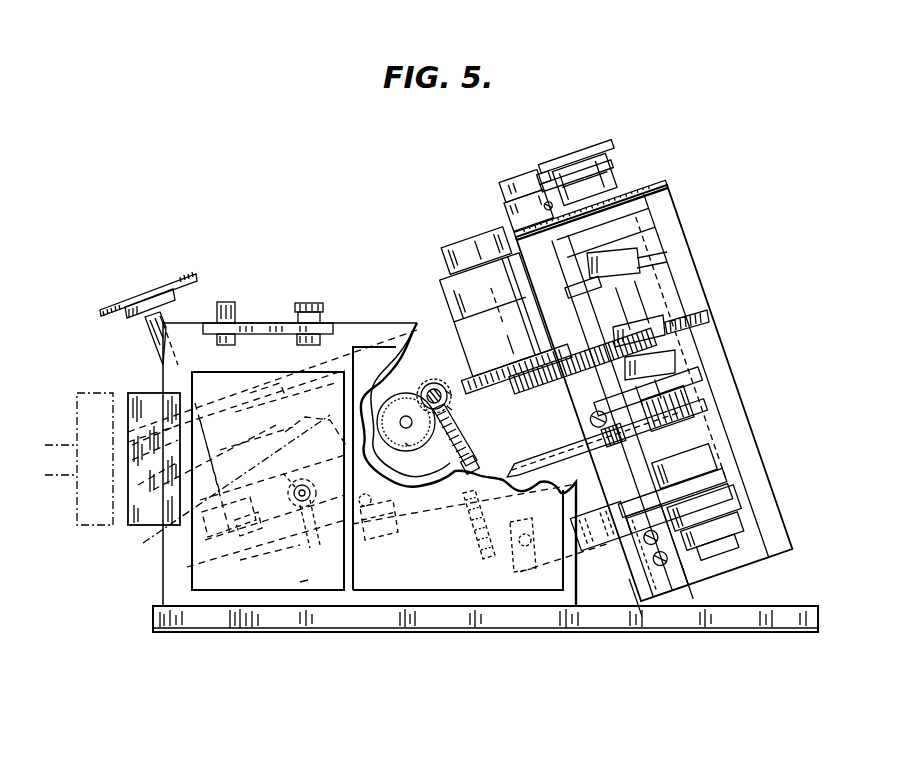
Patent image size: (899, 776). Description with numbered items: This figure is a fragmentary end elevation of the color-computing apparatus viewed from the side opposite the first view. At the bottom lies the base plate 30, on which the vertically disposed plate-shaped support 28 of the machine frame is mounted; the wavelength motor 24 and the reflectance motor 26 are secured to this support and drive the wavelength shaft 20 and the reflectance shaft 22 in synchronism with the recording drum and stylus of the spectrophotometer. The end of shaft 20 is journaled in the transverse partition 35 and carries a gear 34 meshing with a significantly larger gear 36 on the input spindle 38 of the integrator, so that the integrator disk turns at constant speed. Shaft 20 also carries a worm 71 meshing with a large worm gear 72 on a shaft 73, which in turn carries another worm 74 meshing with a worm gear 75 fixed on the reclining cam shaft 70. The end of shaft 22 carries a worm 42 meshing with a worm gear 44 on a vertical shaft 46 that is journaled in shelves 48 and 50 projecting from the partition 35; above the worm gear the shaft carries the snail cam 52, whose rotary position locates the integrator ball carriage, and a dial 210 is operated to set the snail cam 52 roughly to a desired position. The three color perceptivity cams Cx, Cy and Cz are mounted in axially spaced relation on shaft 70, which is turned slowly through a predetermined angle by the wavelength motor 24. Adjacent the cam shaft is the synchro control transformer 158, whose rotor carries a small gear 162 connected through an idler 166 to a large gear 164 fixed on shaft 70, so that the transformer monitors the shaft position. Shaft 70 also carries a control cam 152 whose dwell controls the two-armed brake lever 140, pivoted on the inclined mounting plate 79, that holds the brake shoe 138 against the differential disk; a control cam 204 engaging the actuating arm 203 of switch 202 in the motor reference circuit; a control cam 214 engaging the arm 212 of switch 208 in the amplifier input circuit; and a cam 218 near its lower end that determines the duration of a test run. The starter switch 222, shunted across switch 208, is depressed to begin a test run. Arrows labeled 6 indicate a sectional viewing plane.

The section line 6 is at (463, 548).
The wavelength shaft 20 is at (435, 385).
The reflectance shaft 22 is at (302, 482).
The wavelength motor 24 is at (413, 583).
The reflectance motor 26 is at (308, 578).
The plate-shaped support 28 is at (224, 600).
The base plate 30 is at (155, 632).
The gear 34 is at (450, 398).
The partition 35 is at (445, 334).
The gear 36 is at (409, 445).
The input spindle 38 is at (406, 415).
The worm 42 is at (299, 537).
The worm gear 44 is at (269, 497).
The vertical shaft 46 is at (178, 527).
The shelf 48 is at (272, 431).
The shelf 50 is at (187, 568).
The snail cam 52 is at (112, 524).
The cam shaft 70 is at (620, 243).
The worm 71 is at (452, 409).
The worm gear 72 is at (451, 437).
The shaft 73 is at (565, 447).
The worm 74 is at (660, 430).
The worm gear 75 is at (613, 445).
The inclined mounting plate 79 is at (662, 596).
The brake shoe 138 is at (481, 528).
The brake lever 140 is at (612, 535).
The control cam 152 is at (740, 498).
The synchro control transformer 158 is at (457, 254).
The small gear 162 is at (503, 388).
The large gear 164 is at (672, 323).
The idler 166 is at (593, 363).
The switch 202 is at (510, 193).
The actuating arm 203 is at (540, 180).
The control cam 204 is at (600, 156).
The switch 208 is at (508, 219).
The dial 210 is at (195, 274).
The actuating arm 212 is at (550, 203).
The control cam 214 is at (617, 190).
The cam 218 is at (745, 521).
The starter switch 222 is at (235, 302).
The color perceptivity cam Cx is at (647, 263).
The color perceptivity cam Cy is at (682, 362).
The color perceptivity cam Cz is at (727, 462).